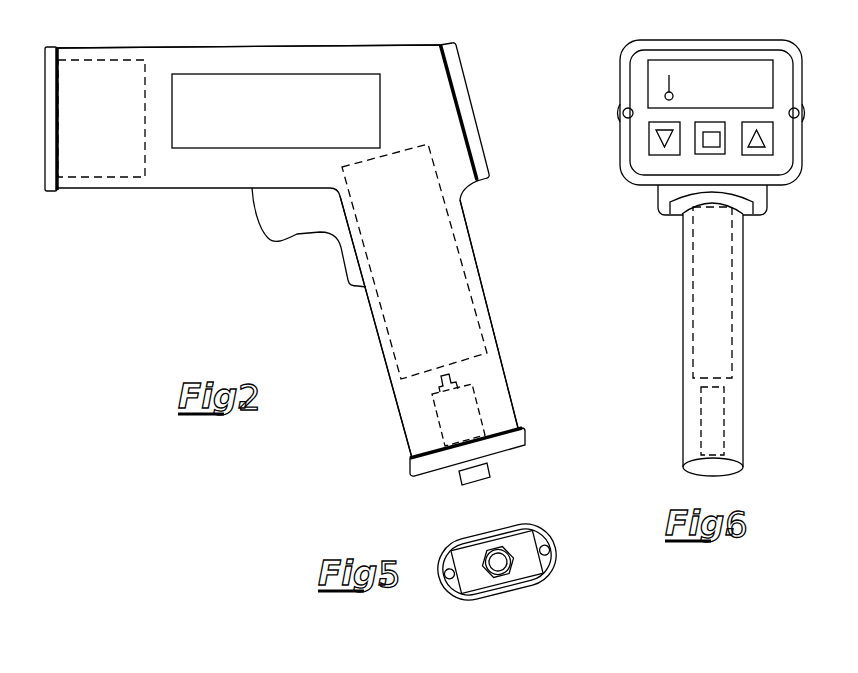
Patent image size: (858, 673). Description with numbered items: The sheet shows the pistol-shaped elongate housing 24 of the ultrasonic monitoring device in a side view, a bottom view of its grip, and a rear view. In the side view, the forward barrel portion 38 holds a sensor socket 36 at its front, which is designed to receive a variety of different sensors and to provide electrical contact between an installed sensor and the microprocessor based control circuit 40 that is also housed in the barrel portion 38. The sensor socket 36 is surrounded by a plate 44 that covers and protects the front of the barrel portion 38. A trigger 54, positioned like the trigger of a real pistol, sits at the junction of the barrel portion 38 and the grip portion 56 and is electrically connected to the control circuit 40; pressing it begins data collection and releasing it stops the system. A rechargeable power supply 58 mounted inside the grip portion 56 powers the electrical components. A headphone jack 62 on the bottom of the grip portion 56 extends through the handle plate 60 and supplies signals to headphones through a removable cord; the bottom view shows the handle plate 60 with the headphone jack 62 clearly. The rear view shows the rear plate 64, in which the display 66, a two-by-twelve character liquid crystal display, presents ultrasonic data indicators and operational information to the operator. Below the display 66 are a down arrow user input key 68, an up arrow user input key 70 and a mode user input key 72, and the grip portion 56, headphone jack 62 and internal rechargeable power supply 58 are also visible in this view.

In FIG. 2, the elongate housing 24 is at (207, 268).
In FIG. 2, the sensor socket 36 is at (92, 177).
In FIG. 2, the barrel portion 38 is at (83, 46).
In FIG. 2, the microprocessor based control circuit 40 is at (295, 83).
In FIG. 2, the plate 44 is at (50, 192).
In FIG. 2, the trigger 54 is at (283, 236).
In FIG. 2, the grip portion 56 is at (502, 380).
In FIG. 5, the grip portion 56 is at (562, 531).
In FIG. 6, the grip portion 56 is at (690, 415).
In FIG. 2, the rechargeable power supply 58 is at (457, 273).
In FIG. 6, the rechargeable power supply 58 is at (697, 363).
In FIG. 2, the handle plate 60 is at (415, 470).
In FIG. 5, the handle plate 60 is at (540, 575).
In FIG. 2, the headphone jack 62 is at (462, 483).
In FIG. 5, the headphone jack 62 is at (493, 550).
In FIG. 6, the headphone jack 62 is at (703, 440).
In FIG. 2, the rear plate 64 is at (448, 42).
In FIG. 6, the rear plate 64 is at (797, 178).
In FIG. 6, the display 66 is at (660, 58).
In FIG. 6, the down arrow user input key 68 is at (655, 152).
In FIG. 6, the up arrow user input key 70 is at (772, 148).
In FIG. 6, the mode user input key 72 is at (697, 152).